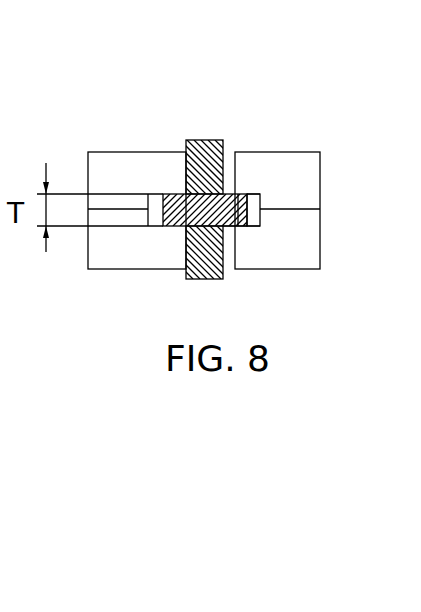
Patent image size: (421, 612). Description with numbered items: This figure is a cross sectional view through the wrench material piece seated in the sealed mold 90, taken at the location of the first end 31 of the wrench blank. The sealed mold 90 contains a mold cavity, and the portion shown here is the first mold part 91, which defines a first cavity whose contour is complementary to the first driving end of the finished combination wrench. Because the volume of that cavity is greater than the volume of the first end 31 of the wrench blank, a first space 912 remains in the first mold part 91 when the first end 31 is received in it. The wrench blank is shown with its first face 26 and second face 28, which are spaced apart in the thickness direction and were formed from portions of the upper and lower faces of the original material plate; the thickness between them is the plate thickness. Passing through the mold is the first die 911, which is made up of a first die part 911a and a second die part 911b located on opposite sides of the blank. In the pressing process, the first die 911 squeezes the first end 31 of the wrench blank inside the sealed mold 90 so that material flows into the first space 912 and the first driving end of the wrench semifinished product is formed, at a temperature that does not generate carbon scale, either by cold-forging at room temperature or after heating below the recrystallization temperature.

The sealed mold 90 is at (128, 250).
The first die 911 is at (200, 183).
The first die part 911a is at (182, 145).
The second die part 911b is at (211, 258).
The first end 31 is at (165, 196).
The first space 912 is at (256, 203).
The first face 26 is at (238, 194).
The first mold part 91 is at (253, 222).
The second face 28 is at (238, 226).